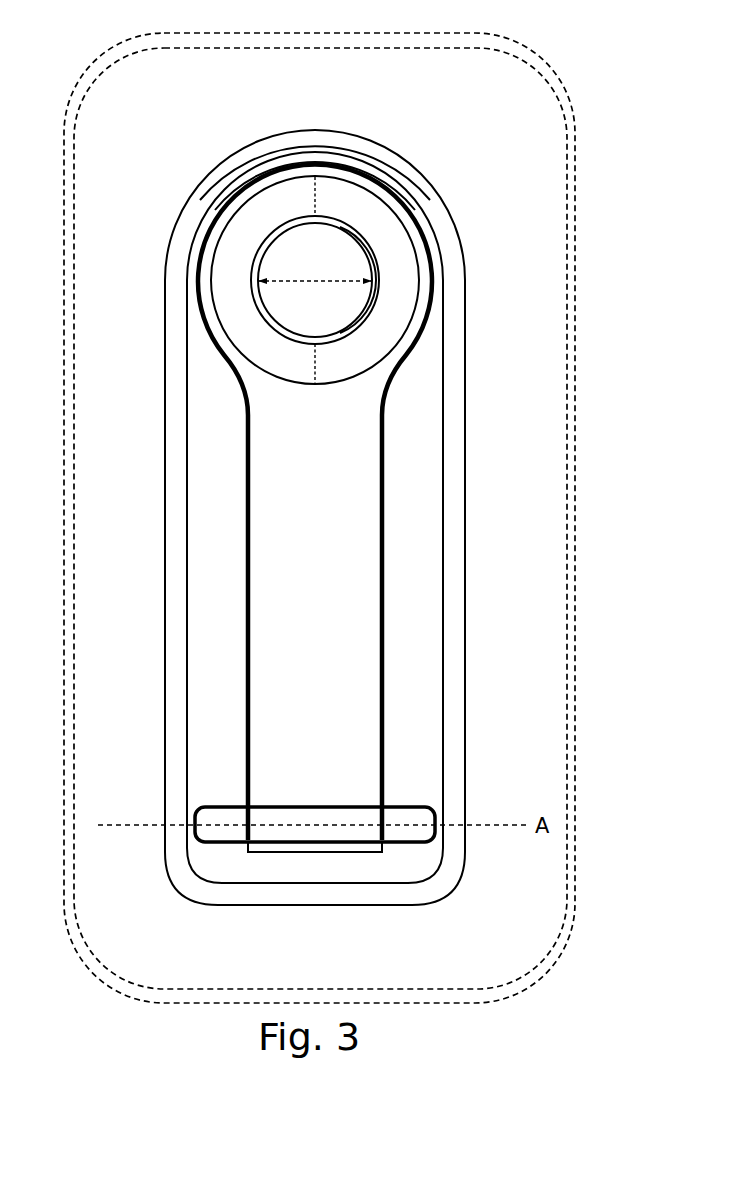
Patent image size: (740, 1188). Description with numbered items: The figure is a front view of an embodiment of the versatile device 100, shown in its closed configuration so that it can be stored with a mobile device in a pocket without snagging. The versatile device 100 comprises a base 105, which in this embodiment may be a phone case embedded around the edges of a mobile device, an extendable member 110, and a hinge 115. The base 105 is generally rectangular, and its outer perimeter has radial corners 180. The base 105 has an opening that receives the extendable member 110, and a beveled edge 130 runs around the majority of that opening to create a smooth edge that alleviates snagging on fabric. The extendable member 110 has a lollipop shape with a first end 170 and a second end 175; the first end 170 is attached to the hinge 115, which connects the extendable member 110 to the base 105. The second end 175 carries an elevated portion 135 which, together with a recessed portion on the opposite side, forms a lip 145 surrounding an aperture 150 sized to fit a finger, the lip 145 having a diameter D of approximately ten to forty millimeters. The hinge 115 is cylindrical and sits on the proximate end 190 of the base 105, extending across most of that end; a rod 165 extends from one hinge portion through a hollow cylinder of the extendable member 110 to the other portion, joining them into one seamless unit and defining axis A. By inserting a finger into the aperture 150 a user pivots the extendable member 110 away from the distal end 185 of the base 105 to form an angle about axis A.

The versatile device 100 is at (582, 84).
The base 105 is at (419, 592).
The extendable member 110 is at (354, 538).
The hinge 115 is at (404, 838).
The beveled edge 130 is at (455, 385).
The elevated portion 135 is at (370, 273).
The lip 145 is at (340, 221).
The aperture 150 is at (283, 262).
The rod 165 is at (434, 824).
The first end 170 is at (320, 768).
The second end 175 is at (260, 168).
The radial corners 180 is at (186, 876).
The distal end 185 is at (314, 143).
The proximate end 190 is at (398, 892).